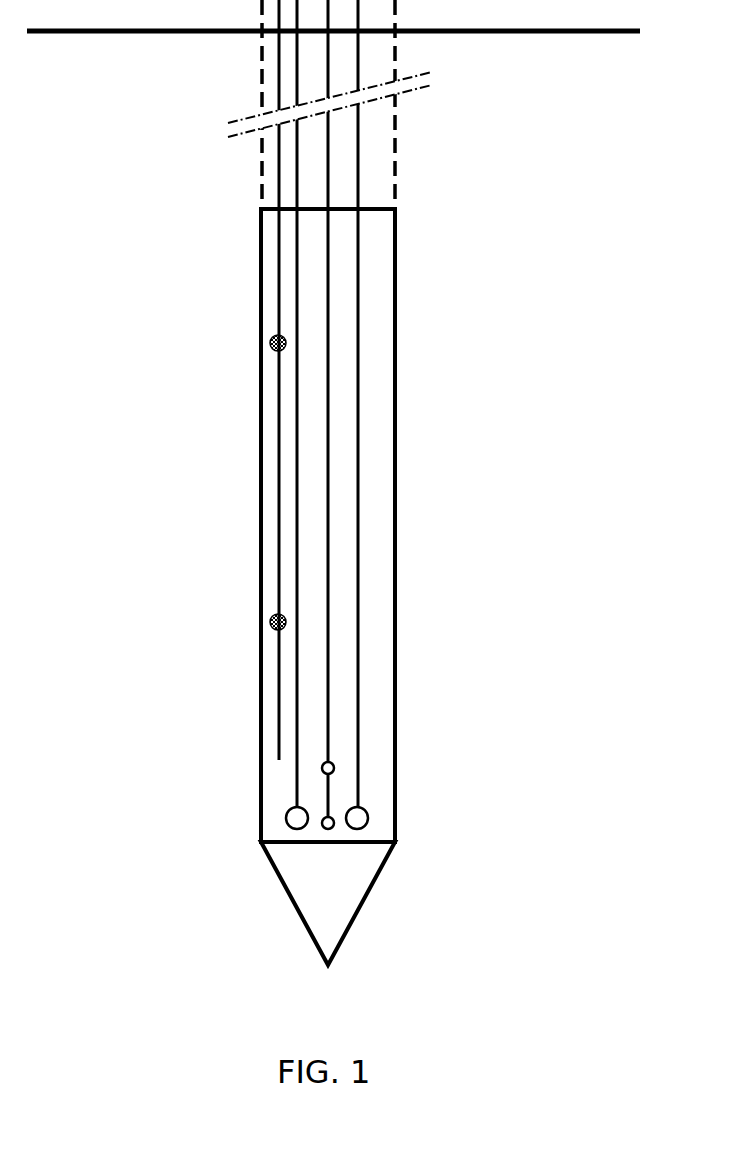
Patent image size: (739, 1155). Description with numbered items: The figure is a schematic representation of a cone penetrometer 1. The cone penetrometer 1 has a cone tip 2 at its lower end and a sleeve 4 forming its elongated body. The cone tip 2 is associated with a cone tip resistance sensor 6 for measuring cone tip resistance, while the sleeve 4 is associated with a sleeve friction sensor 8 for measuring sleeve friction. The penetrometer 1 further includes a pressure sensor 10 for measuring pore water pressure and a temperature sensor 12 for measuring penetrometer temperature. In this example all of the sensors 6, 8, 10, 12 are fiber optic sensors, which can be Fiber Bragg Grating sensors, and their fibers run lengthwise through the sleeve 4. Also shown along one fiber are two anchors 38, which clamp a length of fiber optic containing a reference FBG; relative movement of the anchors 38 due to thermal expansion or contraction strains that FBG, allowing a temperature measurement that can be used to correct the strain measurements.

The cone penetrometer 1 is at (353, 482).
The cone tip 2 is at (367, 902).
The sleeve 4 is at (377, 428).
The cone tip resistance sensor 6 is at (330, 795).
The sleeve friction sensor 8 is at (249, 484).
The pressure sensor 10 is at (286, 818).
The temperature sensor 12 is at (368, 818).
The anchors 38 is at (270, 343).